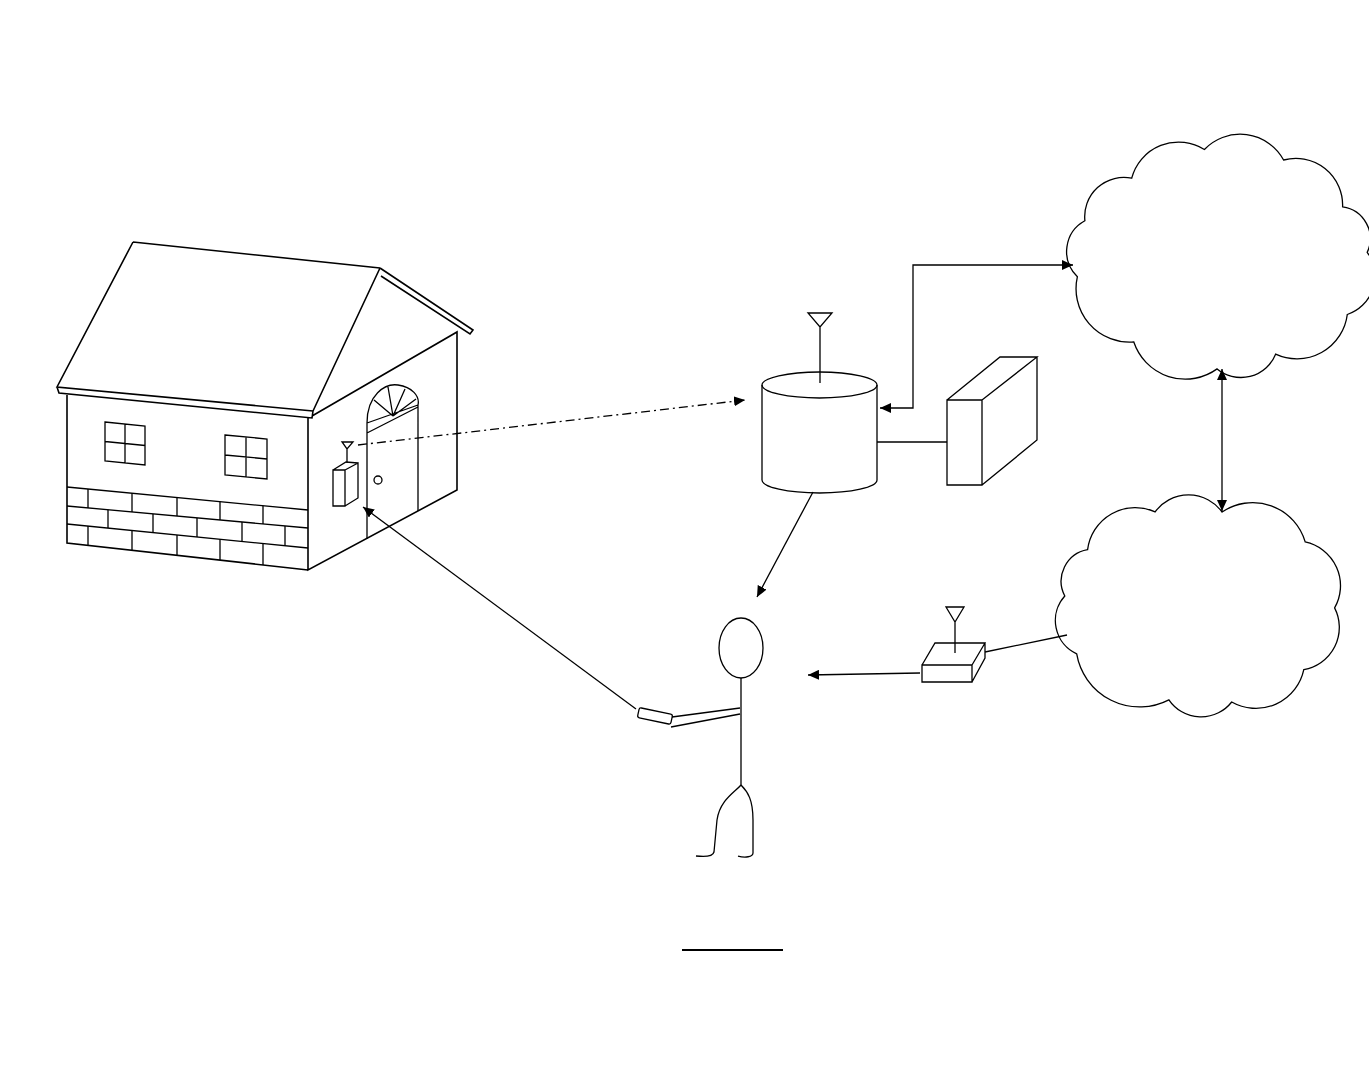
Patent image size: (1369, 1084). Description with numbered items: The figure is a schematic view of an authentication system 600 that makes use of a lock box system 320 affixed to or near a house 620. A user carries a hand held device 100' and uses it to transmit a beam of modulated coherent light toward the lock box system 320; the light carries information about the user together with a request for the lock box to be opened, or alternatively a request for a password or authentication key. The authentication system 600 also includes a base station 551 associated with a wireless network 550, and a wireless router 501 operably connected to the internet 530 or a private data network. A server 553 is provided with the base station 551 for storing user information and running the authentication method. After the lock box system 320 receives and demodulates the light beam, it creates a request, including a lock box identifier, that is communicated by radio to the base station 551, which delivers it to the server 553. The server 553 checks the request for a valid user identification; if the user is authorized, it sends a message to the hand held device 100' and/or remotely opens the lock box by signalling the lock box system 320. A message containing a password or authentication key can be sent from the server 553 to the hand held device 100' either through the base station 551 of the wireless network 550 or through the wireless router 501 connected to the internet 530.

The authentication system 600 is at (100, 138).
The house 620 is at (275, 258).
The lock box system 320 is at (333, 495).
The hand held device 100' is at (632, 661).
The base station 551 is at (797, 483).
The server 553 is at (990, 433).
The wireless network 550 is at (1203, 308).
The internet 530 is at (1177, 636).
The wireless router 501 is at (945, 683).